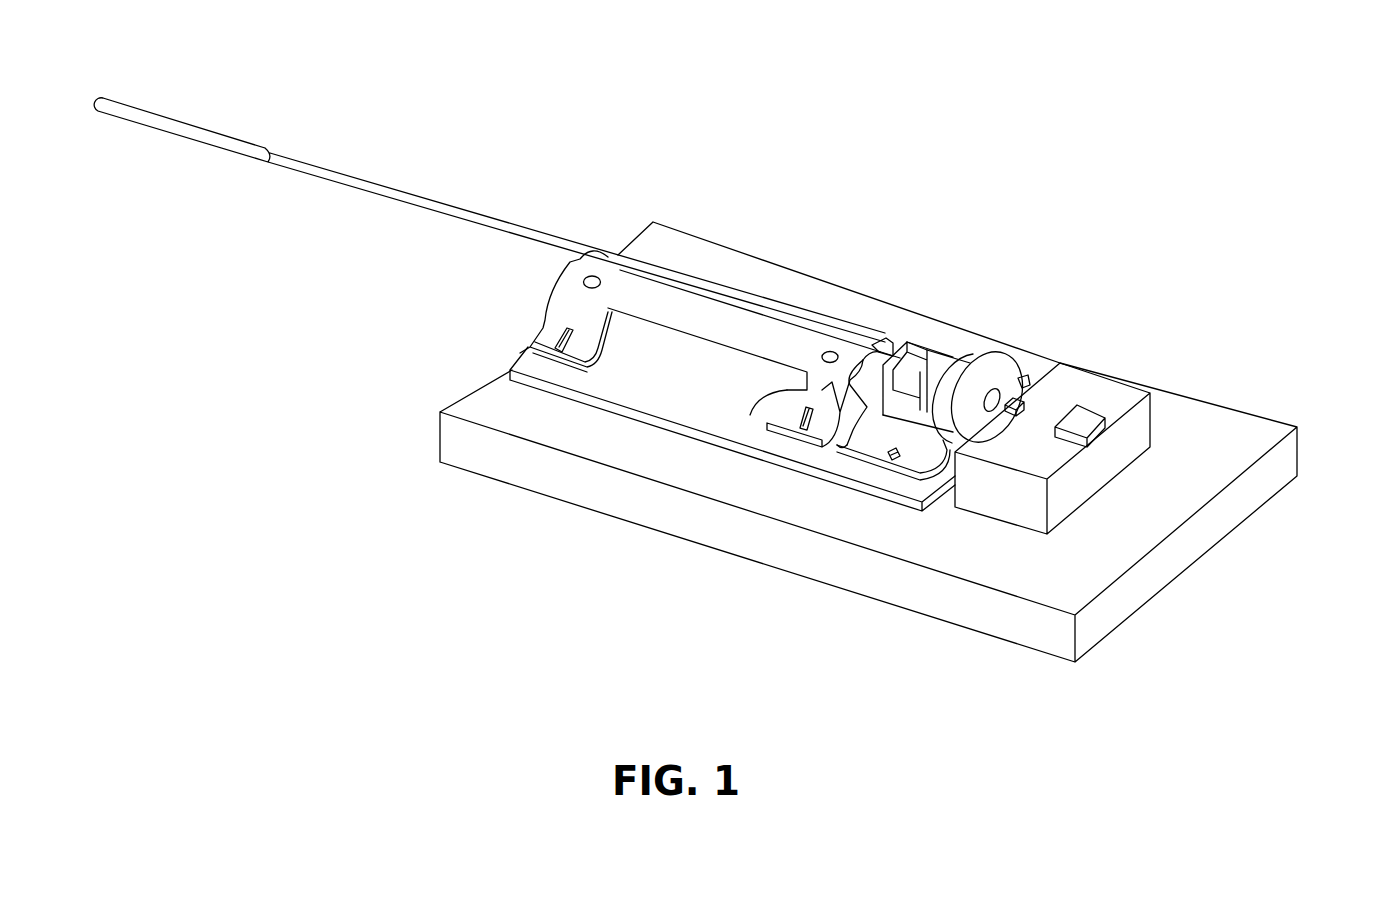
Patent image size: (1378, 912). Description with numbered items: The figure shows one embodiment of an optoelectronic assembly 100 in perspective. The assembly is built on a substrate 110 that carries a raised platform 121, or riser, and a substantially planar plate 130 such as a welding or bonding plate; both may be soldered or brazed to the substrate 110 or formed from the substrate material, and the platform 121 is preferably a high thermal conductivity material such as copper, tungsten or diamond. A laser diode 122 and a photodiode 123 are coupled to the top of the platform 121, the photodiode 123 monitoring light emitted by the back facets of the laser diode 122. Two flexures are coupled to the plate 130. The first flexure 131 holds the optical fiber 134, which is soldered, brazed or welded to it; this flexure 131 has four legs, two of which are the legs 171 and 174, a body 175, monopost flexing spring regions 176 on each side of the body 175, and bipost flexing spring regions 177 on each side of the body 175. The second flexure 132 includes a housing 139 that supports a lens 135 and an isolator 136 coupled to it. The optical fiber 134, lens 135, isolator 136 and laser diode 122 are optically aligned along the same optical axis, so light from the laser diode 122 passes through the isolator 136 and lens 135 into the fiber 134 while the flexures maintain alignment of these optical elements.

The optoelectronic assembly 100 is at (1204, 186).
The substrate 110 is at (1055, 640).
The platform 121 is at (1102, 390).
The laser diode 122 is at (1007, 407).
The photodiode 123 is at (1095, 430).
The plate 130 is at (527, 367).
The flexure 131 is at (692, 320).
The flexure 132 is at (897, 447).
The optical fiber 134 is at (403, 196).
The lens 135 is at (1003, 367).
The isolator 136 is at (923, 353).
The housing 139 is at (960, 367).
The leg 171 is at (555, 320).
The leg 174 is at (824, 450).
The body 175 is at (733, 337).
The monopost flexing spring region 176 is at (803, 380).
The bipost flexing spring region 177 is at (553, 302).